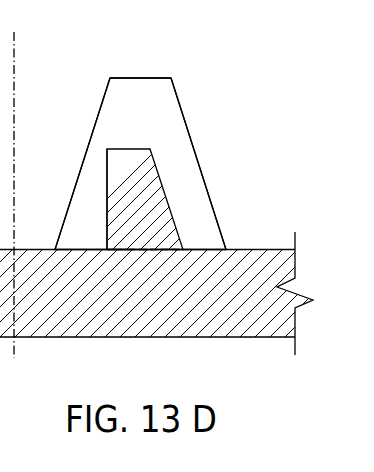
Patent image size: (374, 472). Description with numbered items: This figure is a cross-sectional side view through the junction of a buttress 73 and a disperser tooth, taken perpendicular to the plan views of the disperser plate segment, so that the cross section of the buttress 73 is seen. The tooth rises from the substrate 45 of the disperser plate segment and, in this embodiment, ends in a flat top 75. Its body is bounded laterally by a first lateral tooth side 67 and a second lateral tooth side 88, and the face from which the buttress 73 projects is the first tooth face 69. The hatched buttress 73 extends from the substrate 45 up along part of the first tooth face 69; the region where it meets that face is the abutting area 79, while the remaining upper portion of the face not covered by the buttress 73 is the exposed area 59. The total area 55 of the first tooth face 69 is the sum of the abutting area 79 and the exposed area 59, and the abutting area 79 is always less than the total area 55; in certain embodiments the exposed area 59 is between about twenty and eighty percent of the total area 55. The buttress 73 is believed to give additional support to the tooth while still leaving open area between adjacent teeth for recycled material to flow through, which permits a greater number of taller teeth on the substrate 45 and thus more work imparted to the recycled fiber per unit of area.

The substrate 45 is at (297, 250).
The total area of the first tooth face 55 is at (200, 237).
The exposed area 59 is at (125, 92).
The first lateral tooth side 67 is at (192, 148).
The first tooth face 69 is at (174, 112).
The buttress 73 is at (158, 183).
The flat top 75 is at (141, 78).
The abutting area 79 is at (114, 183).
The second lateral tooth side 88 is at (100, 110).